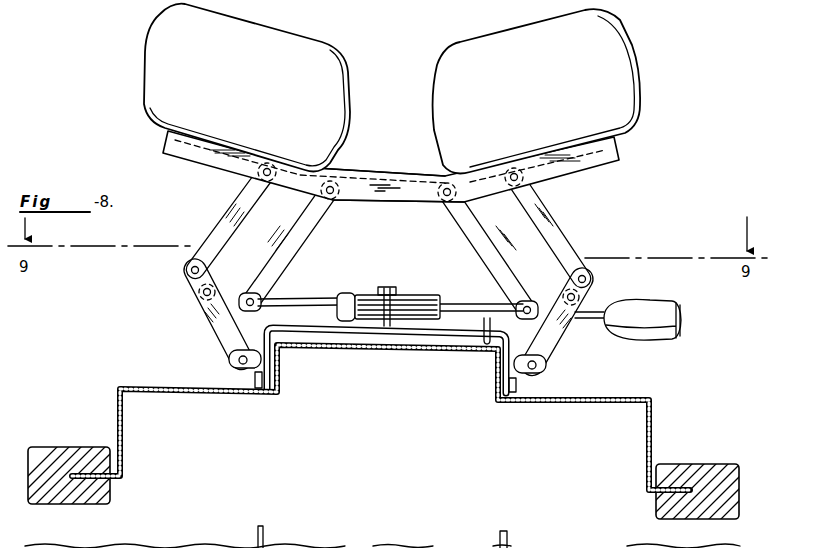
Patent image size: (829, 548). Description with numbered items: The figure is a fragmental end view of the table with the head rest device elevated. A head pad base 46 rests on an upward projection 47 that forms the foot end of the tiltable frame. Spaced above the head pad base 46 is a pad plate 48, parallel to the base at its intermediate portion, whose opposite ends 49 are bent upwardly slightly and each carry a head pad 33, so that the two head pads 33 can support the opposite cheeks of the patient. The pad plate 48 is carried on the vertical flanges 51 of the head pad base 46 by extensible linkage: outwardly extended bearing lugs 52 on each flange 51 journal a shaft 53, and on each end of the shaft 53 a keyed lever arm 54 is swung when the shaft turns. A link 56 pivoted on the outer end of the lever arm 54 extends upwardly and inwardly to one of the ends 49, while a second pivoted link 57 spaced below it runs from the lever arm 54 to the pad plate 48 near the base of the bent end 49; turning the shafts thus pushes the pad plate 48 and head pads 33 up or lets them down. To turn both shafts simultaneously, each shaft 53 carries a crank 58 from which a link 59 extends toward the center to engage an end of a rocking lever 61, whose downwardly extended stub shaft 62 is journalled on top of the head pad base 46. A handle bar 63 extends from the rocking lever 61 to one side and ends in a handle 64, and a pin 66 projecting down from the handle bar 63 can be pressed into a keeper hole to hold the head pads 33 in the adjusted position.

The head pad 33 is at (268, 72).
The head pad base 46 is at (310, 328).
The upward projection 47 is at (173, 388).
The pad plate 48 is at (387, 197).
The end of pad plate 49 is at (223, 167).
The vertical flange 51 is at (262, 340).
The bearing lug 52 is at (230, 357).
The shaft 53 is at (238, 362).
The lever arm 54 is at (217, 325).
The link 56 is at (223, 218).
The pivoted link 57 is at (302, 222).
The crank 58 is at (243, 292).
The link 59 is at (290, 300).
The rocking lever 61 is at (363, 293).
The stub shaft 62 is at (387, 287).
The handle bar 63 is at (584, 319).
The handle 64 is at (664, 342).
The pin 66 is at (483, 324).